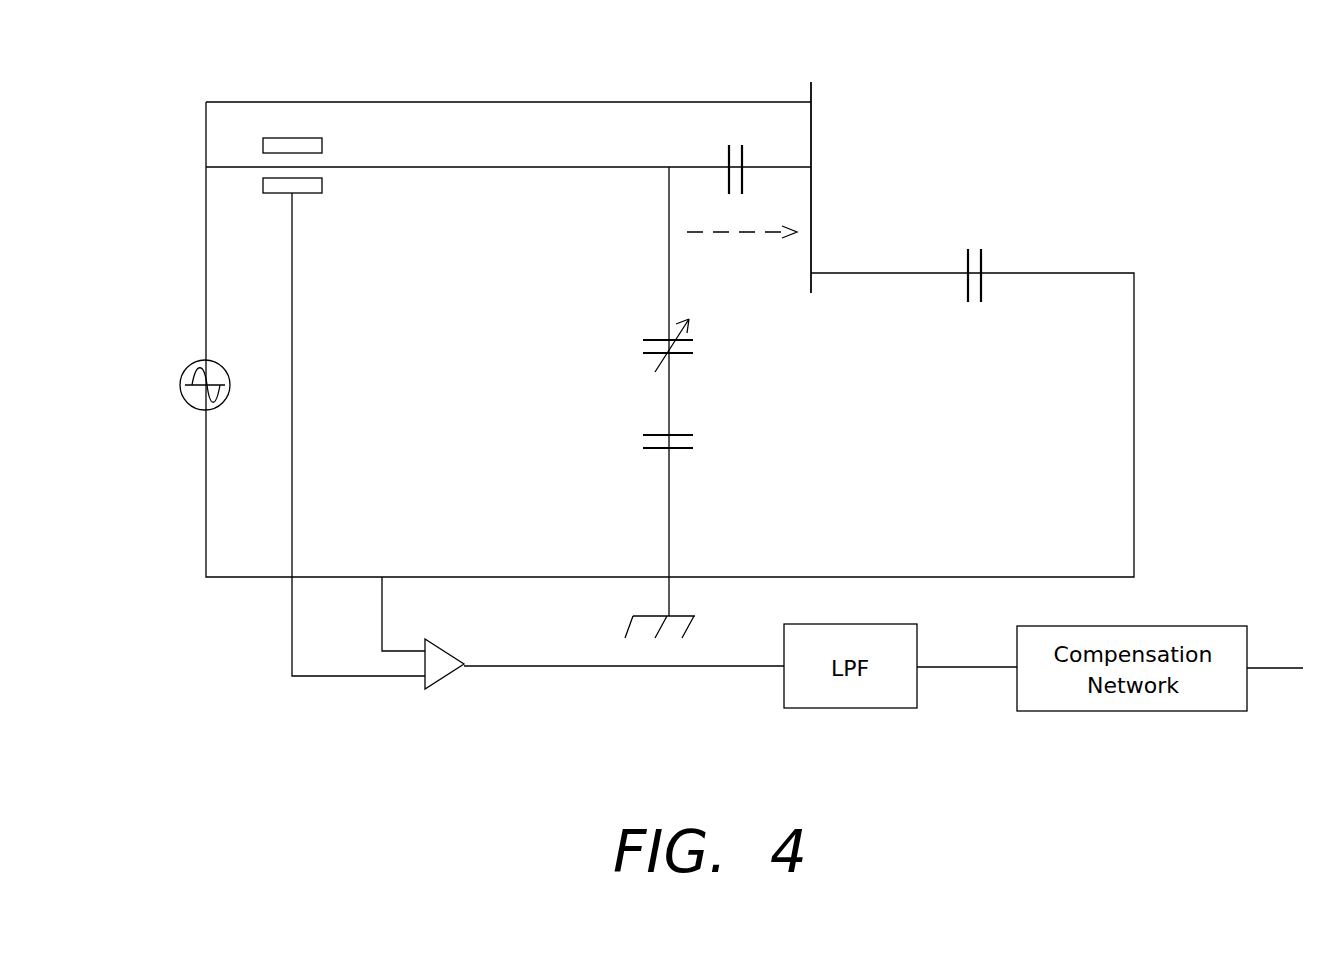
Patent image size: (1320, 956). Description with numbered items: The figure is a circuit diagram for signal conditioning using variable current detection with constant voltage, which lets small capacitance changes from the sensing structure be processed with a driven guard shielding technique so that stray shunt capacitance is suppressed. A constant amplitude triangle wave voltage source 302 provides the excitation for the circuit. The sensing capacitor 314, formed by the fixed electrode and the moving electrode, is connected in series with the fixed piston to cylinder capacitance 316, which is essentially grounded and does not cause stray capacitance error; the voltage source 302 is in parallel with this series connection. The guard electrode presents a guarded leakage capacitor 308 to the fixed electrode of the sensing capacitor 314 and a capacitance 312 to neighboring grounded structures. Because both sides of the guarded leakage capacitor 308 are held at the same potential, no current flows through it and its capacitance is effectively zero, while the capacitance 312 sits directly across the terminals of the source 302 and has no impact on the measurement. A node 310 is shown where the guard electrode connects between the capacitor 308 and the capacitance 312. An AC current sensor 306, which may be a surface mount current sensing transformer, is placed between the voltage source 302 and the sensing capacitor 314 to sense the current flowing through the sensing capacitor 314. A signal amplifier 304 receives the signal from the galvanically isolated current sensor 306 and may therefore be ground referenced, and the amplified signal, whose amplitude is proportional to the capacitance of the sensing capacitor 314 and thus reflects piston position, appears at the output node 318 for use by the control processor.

The constant amplitude triangle wave voltage source 302 is at (185, 402).
The signal amplifier 304 is at (447, 676).
The AC current sensor 306 is at (304, 138).
The guarded leakage capacitor 308 is at (729, 160).
The node/conductor 310 is at (812, 155).
The capacitance to neighboring grounded structures 312 is at (983, 263).
The sensing capacitor 314 is at (657, 338).
The fixed piston to cylinder capacitance 316 is at (658, 434).
The output node 318 is at (614, 667).